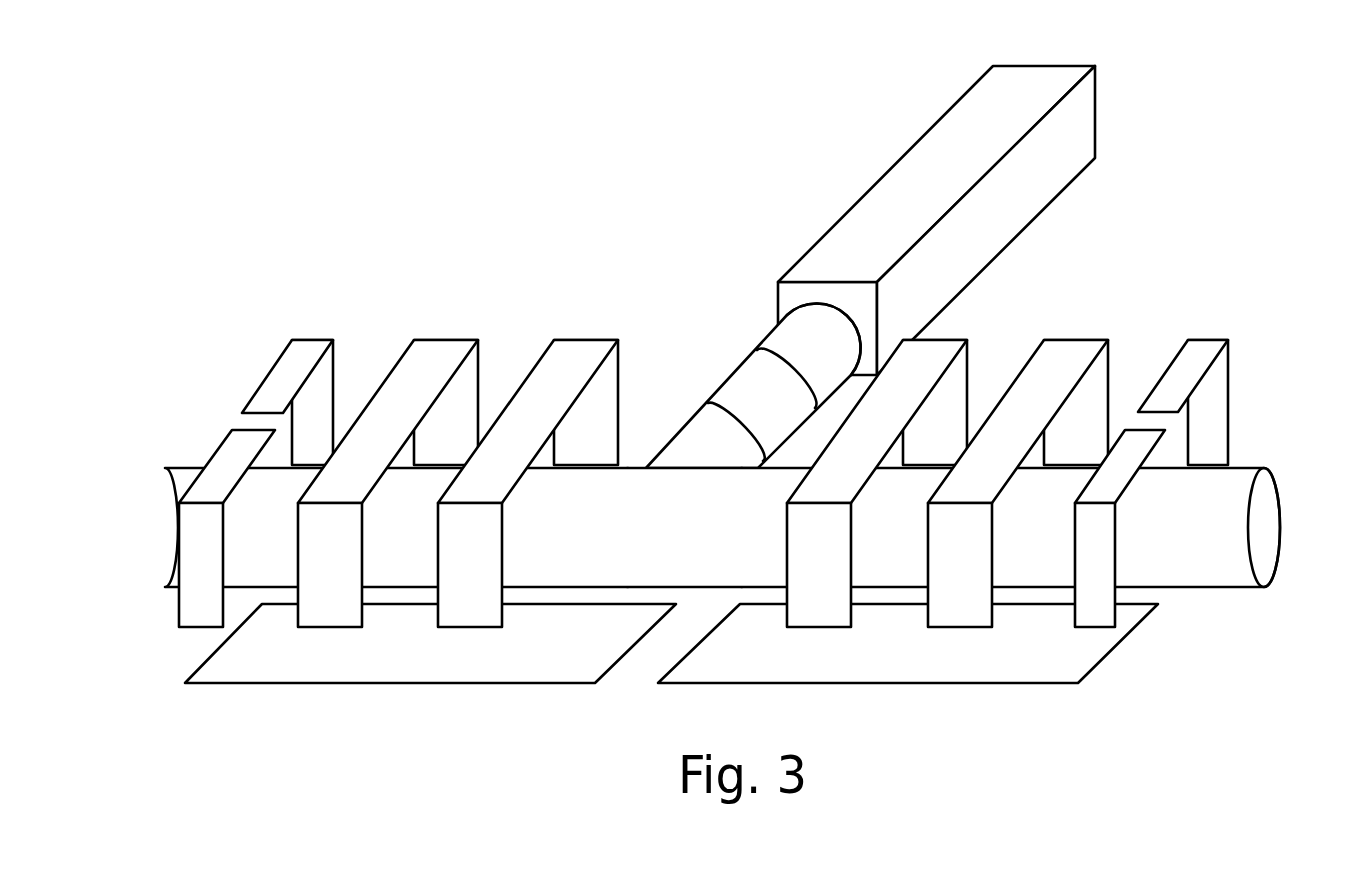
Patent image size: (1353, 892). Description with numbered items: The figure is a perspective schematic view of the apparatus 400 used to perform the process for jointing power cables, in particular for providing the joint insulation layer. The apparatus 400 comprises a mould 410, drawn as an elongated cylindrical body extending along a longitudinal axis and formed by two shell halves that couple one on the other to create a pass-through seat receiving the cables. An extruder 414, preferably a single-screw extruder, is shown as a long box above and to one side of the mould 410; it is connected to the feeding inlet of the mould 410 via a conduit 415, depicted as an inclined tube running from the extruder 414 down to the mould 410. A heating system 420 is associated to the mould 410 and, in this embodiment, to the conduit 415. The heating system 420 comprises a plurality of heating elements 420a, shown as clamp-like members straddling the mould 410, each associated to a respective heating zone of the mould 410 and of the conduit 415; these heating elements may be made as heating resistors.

The apparatus 400 is at (749, 421).
The mould 410 is at (1240, 590).
The extruder 414 is at (921, 165).
The conduit 415 is at (797, 343).
The heating system 420 is at (760, 397).
The heating elements 420a is at (293, 358).